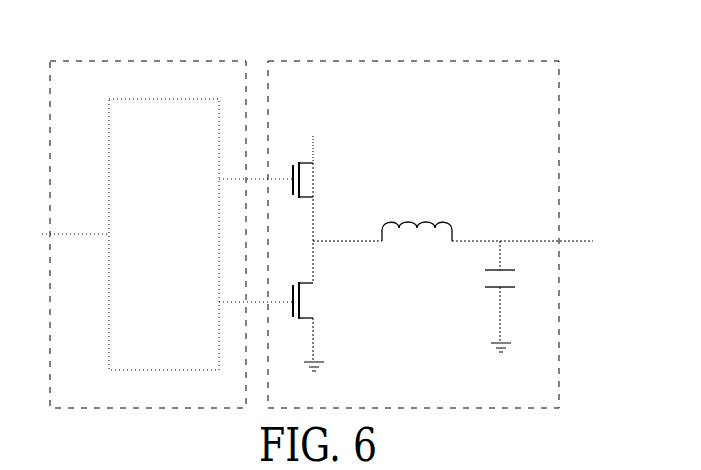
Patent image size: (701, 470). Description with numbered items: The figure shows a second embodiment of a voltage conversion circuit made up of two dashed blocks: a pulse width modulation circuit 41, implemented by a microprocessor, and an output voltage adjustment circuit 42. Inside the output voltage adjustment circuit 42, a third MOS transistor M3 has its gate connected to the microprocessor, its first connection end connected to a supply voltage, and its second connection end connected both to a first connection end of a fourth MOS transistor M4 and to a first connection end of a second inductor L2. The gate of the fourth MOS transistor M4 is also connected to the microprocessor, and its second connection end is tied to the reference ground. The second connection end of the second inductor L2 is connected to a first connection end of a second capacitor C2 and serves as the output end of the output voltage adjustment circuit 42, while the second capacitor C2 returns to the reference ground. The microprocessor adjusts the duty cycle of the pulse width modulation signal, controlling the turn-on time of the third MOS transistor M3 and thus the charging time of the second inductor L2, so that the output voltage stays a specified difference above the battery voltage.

The pulse width modulation circuit 41 is at (132, 59).
The output voltage adjustment circuit 42 is at (413, 204).
The third MOS transistor M3 is at (321, 181).
The fourth MOS transistor M4 is at (325, 300).
The second inductor L2 is at (417, 219).
The second capacitor C2 is at (520, 296).